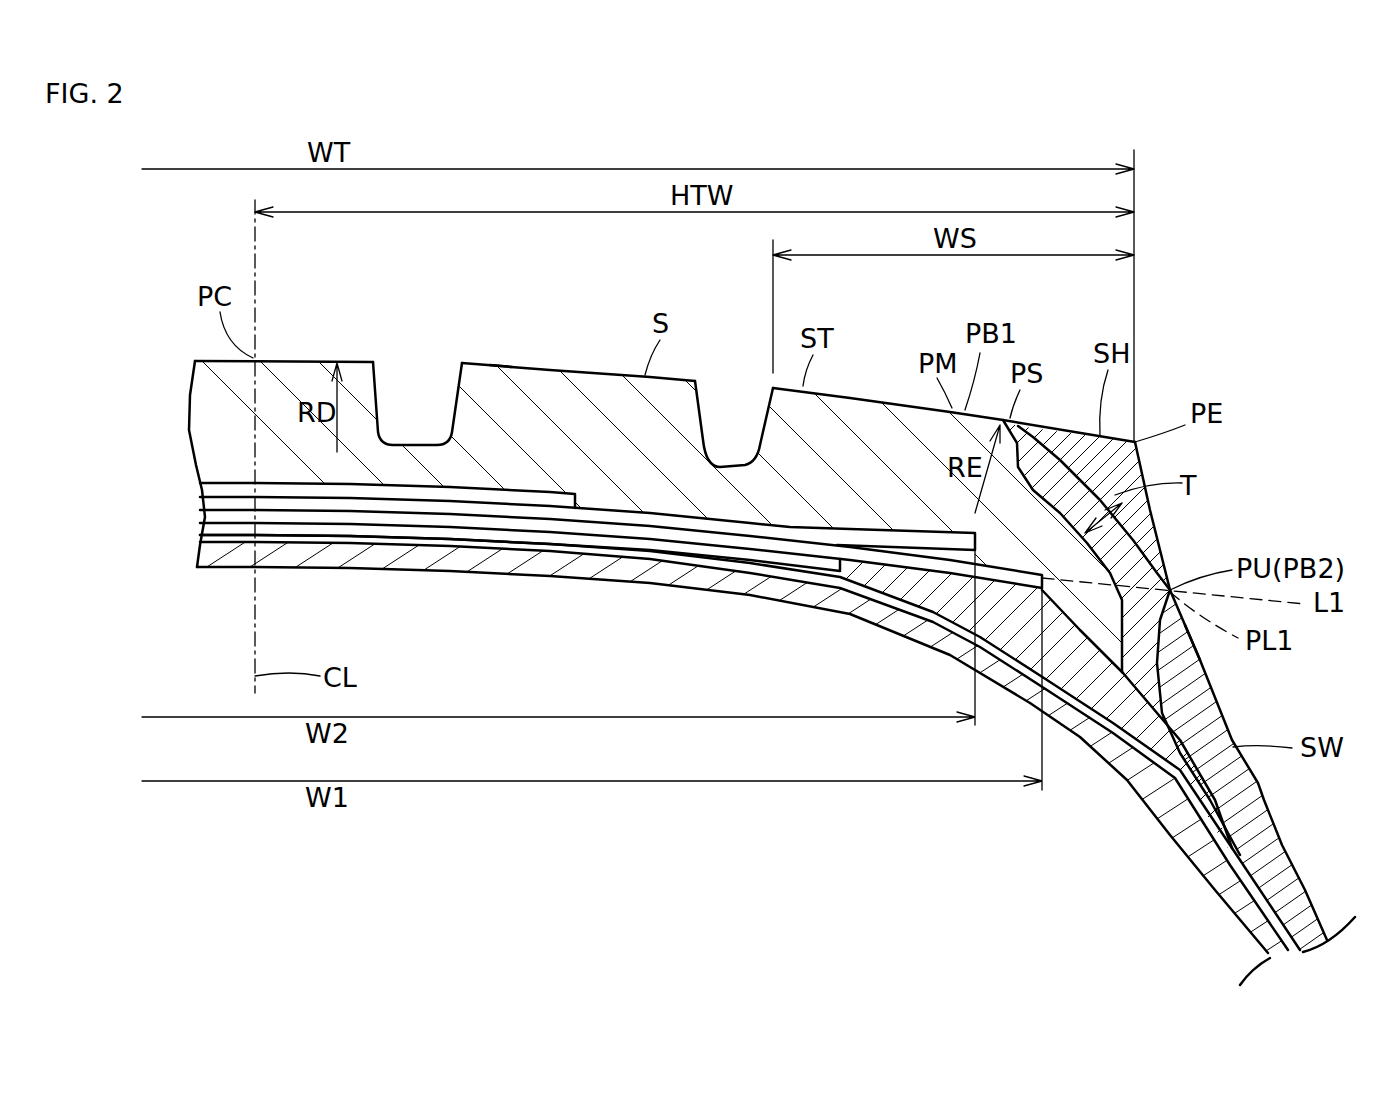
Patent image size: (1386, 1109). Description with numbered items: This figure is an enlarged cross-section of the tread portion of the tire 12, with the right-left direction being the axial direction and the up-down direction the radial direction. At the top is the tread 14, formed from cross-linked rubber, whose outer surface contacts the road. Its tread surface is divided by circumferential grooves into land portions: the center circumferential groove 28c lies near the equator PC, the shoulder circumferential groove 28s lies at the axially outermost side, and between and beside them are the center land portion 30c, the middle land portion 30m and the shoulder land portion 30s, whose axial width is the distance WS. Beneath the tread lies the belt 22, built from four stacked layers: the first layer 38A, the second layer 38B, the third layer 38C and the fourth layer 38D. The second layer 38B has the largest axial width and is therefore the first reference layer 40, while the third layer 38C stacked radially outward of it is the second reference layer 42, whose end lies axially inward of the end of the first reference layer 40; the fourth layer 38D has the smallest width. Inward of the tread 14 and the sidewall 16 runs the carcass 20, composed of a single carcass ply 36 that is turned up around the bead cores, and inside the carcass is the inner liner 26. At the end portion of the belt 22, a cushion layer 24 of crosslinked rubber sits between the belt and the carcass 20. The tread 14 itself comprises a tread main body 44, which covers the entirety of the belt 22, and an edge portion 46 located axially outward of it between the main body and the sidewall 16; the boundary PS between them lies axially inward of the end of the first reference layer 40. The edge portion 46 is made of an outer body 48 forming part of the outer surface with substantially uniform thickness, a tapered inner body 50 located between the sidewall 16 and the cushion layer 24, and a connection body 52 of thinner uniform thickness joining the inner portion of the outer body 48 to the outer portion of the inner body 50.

The tire 12 is at (1225, 237).
The tread 14 is at (602, 353).
The sidewall 16 is at (1272, 850).
The carcass 20 is at (348, 561).
The belt 22 is at (208, 468).
The cushion layer 24 is at (933, 600).
The inner liner 26 is at (517, 591).
The center circumferential groove 28c is at (378, 392).
The shoulder circumferential groove 28s is at (708, 410).
The center land portion 30c is at (293, 377).
The middle land portion 30m is at (543, 382).
The shoulder land portion 30s is at (862, 400).
The carcass ply 36 is at (750, 742).
The first layer 38A is at (207, 530).
The second layer 38B is at (207, 527).
The third layer 38C is at (215, 503).
The fourth layer 38D is at (207, 487).
The first reference layer 40 is at (548, 549).
The second reference layer 42 is at (515, 516).
The tread main body 44 is at (497, 385).
The edge portion 46 is at (1143, 550).
The outer body 48 is at (1067, 467).
The inner body 50 is at (1155, 703).
The connection body 52 is at (1187, 647).